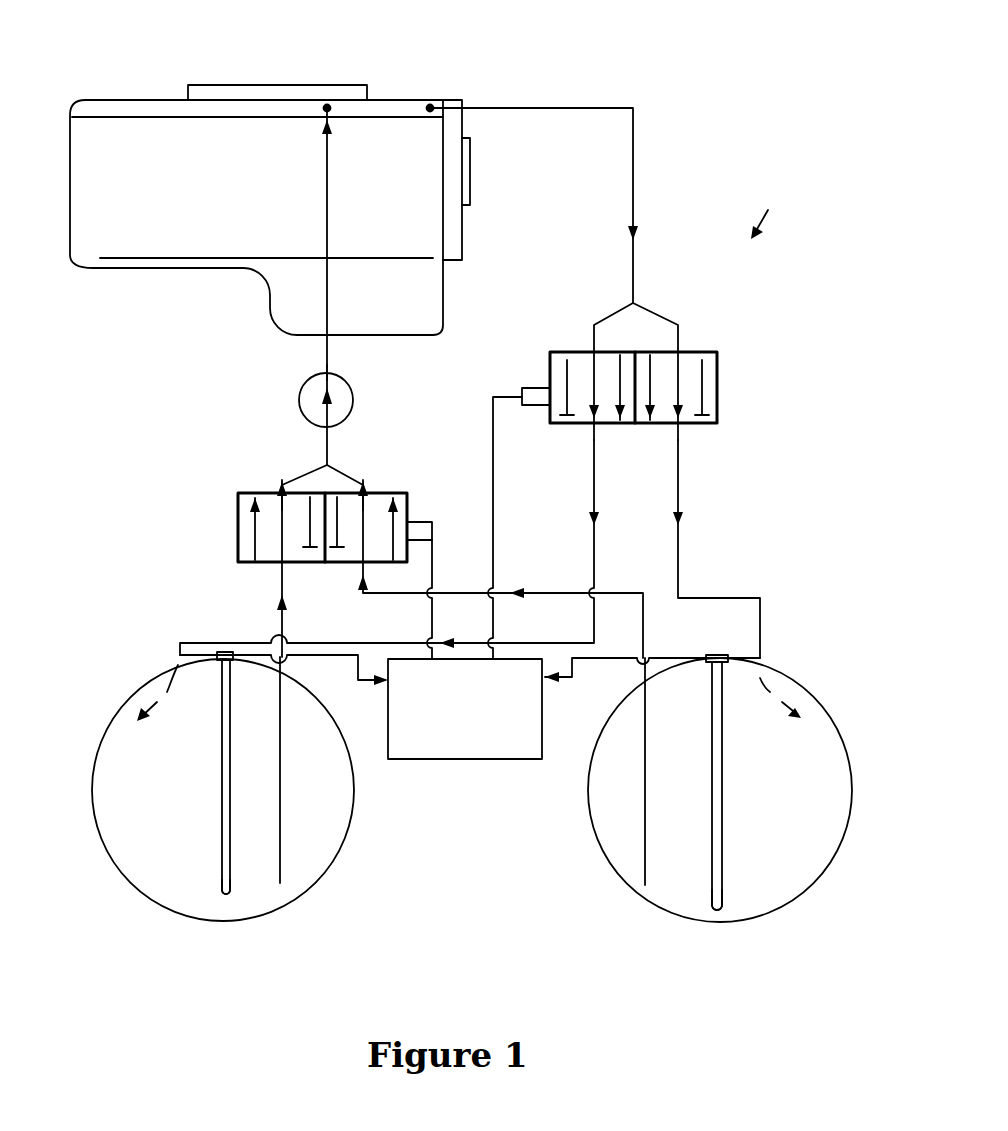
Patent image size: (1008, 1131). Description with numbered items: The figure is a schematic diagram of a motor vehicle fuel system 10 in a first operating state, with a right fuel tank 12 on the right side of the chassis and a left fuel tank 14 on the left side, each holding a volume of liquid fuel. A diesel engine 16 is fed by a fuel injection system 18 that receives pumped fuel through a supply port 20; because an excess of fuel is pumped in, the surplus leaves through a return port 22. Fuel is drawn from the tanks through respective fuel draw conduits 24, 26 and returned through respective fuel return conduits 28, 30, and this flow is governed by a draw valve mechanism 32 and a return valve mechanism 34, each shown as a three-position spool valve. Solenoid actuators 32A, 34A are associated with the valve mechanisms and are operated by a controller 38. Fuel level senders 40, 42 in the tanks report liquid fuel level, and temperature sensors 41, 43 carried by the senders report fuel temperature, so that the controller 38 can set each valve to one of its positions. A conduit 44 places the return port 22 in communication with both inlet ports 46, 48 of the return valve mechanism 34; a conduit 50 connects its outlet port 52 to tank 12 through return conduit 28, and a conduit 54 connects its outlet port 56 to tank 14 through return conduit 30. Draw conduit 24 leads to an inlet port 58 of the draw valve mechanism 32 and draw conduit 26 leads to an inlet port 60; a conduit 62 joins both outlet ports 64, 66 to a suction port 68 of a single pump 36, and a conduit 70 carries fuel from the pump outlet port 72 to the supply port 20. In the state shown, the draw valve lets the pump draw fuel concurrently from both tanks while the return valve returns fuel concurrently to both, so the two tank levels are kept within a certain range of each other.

The motor vehicle fuel system 10 is at (776, 211).
The right fuel tank 12 is at (853, 840).
The left fuel tank 14 is at (115, 863).
The diesel engine 16 is at (465, 95).
The fuel injection system 18 is at (386, 108).
The supply port 20 is at (330, 100).
The return port 22 is at (431, 105).
The fuel draw conduit 24 is at (645, 832).
The fuel draw conduit 26 is at (280, 790).
The fuel return conduit 28 is at (763, 648).
The fuel return conduit 30 is at (177, 655).
The draw valve mechanism 32 is at (238, 530).
The solenoid actuator 32A is at (420, 523).
The return valve mechanism 34 is at (717, 385).
The solenoid actuator 34A is at (530, 387).
The pump 36 is at (357, 390).
The controller 38 is at (461, 759).
The fuel level sender 40 is at (722, 718).
The temperature sensor 41 is at (718, 855).
The fuel level sender 42 is at (222, 755).
The temperature sensor 43 is at (230, 850).
The conduit 44 is at (640, 157).
The inlet port 46 is at (592, 350).
The inlet port 48 is at (678, 348).
The conduit 50 is at (680, 530).
The outlet port 52 is at (680, 425).
The conduit 54 is at (595, 535).
The outlet port 56 is at (590, 425).
The inlet port 58 is at (363, 562).
The inlet port 60 is at (282, 562).
The conduit 62 is at (327, 445).
The outlet port 64 is at (282, 493).
The outlet port 66 is at (363, 493).
The suction port 68 is at (322, 428).
The conduit 70 is at (330, 298).
The outlet port 72 is at (327, 377).